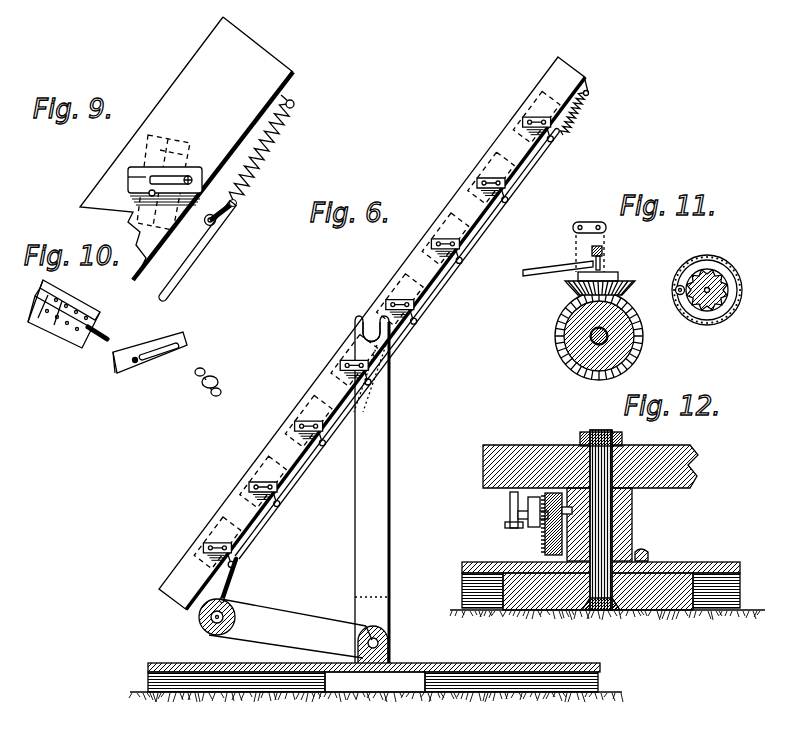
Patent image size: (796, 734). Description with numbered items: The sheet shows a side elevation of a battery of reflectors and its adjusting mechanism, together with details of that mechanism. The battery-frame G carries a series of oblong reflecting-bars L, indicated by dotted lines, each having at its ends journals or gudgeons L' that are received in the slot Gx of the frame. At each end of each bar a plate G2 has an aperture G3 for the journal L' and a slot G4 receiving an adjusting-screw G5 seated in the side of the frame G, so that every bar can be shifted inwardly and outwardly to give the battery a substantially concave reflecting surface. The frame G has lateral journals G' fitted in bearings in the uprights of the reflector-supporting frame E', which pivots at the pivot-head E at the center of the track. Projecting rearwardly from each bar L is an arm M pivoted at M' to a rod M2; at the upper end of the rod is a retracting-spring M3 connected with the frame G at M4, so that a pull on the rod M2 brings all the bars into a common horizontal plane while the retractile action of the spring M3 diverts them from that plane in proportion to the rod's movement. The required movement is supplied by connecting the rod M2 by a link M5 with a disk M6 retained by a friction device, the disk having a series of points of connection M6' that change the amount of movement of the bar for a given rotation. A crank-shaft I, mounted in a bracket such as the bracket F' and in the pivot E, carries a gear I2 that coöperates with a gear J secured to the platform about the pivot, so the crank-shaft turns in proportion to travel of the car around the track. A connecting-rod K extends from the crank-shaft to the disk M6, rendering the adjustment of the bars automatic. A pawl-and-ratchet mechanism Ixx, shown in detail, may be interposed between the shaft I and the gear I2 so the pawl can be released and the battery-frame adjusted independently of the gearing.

In FIG. 6, the battery-frame G is at (372, 333).
In FIG. 6, the lateral journals G' is at (404, 355).
In FIG. 9, the slot Gx is at (128, 177).
In FIG. 10, the plate G2 is at (183, 337).
In FIG. 10, the aperture G3 is at (134, 362).
In FIG. 10, the slot G4 is at (190, 346).
In FIG. 10, the adjusting-screw G5 is at (215, 370).
In FIG. 6, the reflecting-bars L is at (377, 329).
In FIG. 9, the reflecting-bars L is at (163, 173).
In FIG. 10, the reflecting-bars L is at (64, 326).
In FIG. 6, the journals or gudgeons L' is at (376, 338).
In FIG. 9, the journals or gudgeons L' is at (115, 161).
In FIG. 10, the journals or gudgeons L' is at (109, 323).
In FIG. 6, the arm M is at (390, 347).
In FIG. 9, the arm M is at (207, 228).
In FIG. 6, the pivot M' is at (385, 343).
In FIG. 9, the pivot M' is at (213, 176).
In FIG. 6, the rod M2 is at (257, 538).
In FIG. 9, the rod M2 is at (178, 284).
In FIG. 6, the retracting-spring M3 is at (567, 123).
In FIG. 6, the spring connection M4 is at (589, 95).
In FIG. 6, the link M5 is at (232, 577).
In FIG. 6, the disk M6 is at (192, 621).
In FIG. 6, the points of connection M6' is at (290, 622).
In FIG. 6, the pivot-head E is at (383, 489).
In FIG. 12, the pivot-head E is at (618, 524).
In FIG. 12, the reflector-supporting frame E' is at (608, 471).
In FIG. 12, the bracket F' is at (486, 510).
In FIG. 12, the crank-shaft I is at (518, 518).
In FIG. 11, the gear I2 is at (714, 262).
In FIG. 12, the gear I2 is at (545, 548).
In FIG. 11, the pawl-and-ratchet mechanism Ixx is at (725, 276).
In FIG. 12, the pawl-and-ratchet mechanism Ixx is at (553, 492).
In FIG. 11, the gear J is at (643, 353).
In FIG. 12, the gear J is at (648, 553).
In FIG. 11, the connecting-rod K is at (547, 270).
In FIG. 12, the connecting-rod K is at (533, 496).